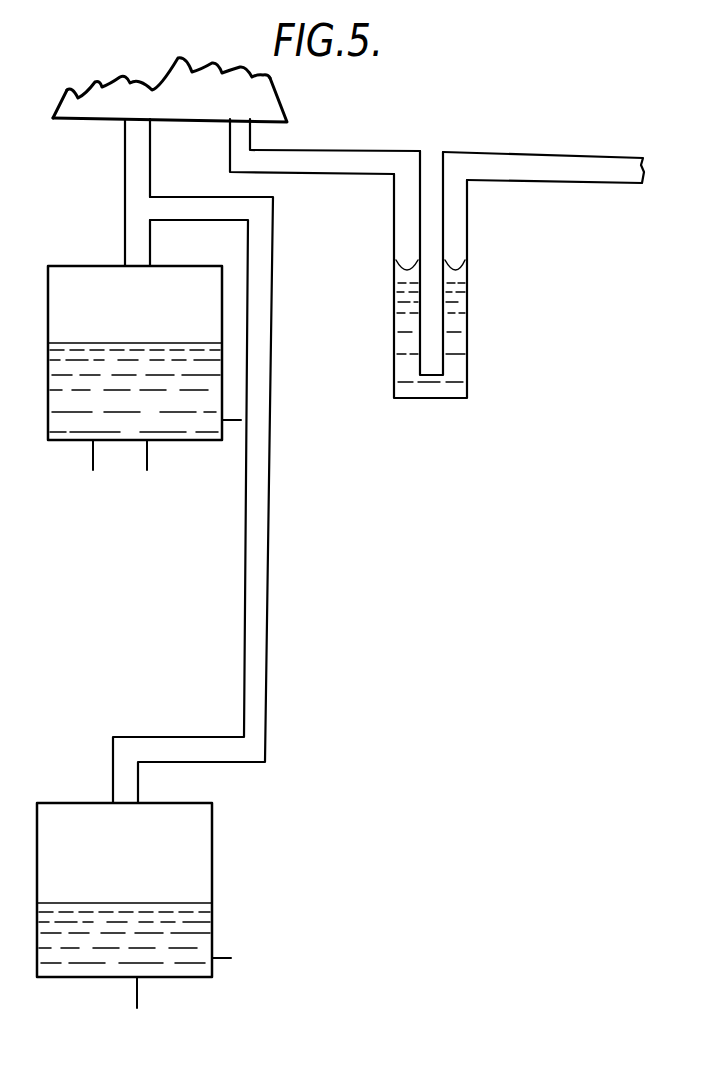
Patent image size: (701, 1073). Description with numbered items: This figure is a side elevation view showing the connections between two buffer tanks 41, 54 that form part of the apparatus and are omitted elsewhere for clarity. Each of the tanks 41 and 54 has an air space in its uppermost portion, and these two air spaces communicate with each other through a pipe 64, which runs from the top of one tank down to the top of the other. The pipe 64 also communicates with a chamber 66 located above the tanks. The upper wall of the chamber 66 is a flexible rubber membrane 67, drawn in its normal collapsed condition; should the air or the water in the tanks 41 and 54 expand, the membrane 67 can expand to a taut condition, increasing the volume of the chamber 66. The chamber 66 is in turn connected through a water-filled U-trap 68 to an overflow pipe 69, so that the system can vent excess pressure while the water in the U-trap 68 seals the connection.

The buffer tank 41 is at (185, 440).
The buffer tank 54 is at (213, 845).
The pipe 64 is at (245, 568).
The chamber 66 is at (258, 97).
The flexible rubber membrane 67 is at (165, 67).
The water-filled U-trap 68 is at (467, 372).
The overflow pipe 69 is at (562, 155).